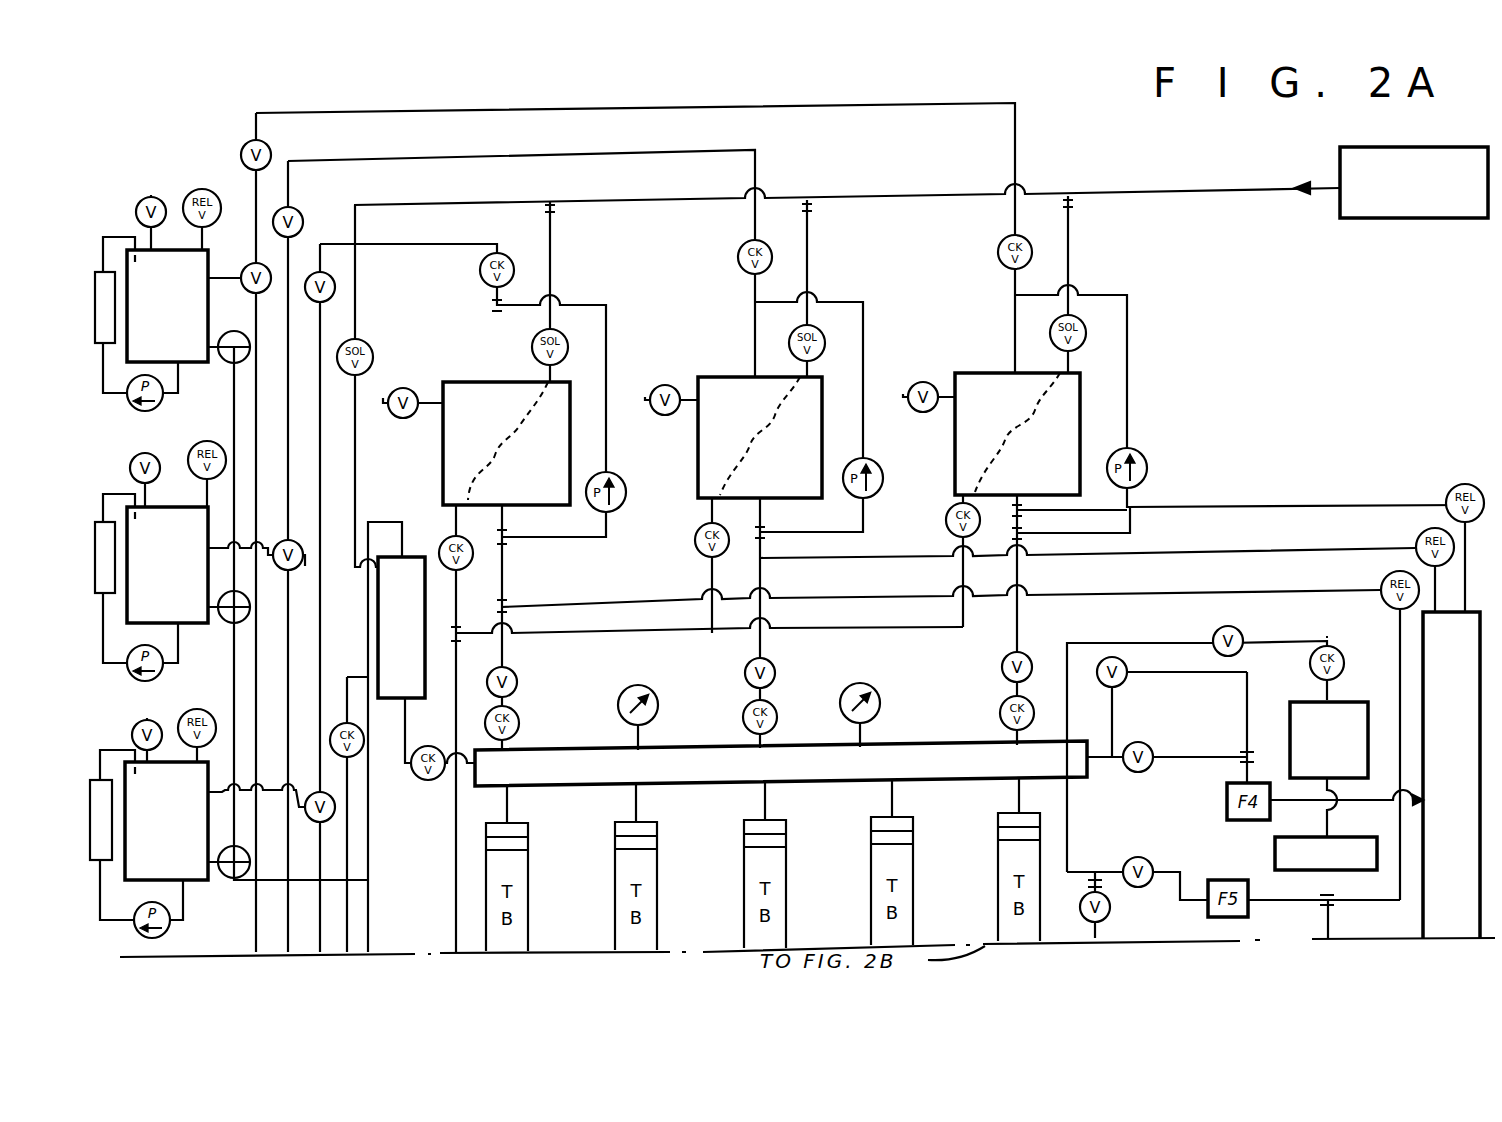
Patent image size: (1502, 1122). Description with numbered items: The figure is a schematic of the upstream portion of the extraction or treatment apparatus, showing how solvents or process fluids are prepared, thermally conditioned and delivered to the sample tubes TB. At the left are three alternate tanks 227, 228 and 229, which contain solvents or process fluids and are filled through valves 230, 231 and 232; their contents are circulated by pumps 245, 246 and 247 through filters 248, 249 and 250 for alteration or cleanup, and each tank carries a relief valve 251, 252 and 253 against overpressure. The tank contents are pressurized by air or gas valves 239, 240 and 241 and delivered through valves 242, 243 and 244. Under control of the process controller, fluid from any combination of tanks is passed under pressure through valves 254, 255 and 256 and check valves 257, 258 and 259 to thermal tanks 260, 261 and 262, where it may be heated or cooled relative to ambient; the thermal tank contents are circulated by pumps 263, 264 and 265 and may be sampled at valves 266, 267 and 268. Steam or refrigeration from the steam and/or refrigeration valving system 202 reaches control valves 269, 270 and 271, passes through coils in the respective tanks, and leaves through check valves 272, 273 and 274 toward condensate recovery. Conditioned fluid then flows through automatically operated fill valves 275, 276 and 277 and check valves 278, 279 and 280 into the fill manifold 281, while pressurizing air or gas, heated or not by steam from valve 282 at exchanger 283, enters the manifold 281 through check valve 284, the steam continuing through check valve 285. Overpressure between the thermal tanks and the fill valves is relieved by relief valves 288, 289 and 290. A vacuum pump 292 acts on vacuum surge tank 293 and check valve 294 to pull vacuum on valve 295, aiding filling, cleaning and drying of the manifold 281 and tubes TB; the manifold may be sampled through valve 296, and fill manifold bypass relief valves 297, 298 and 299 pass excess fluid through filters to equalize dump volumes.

The steam and/or refrigeration valving system 202 is at (1440, 147).
The alternate tank 227 is at (178, 918).
The alternate tank 228 is at (185, 612).
The alternate tank 229 is at (178, 372).
The valve 230 is at (148, 722).
The valve 231 is at (150, 452).
The valve 232 is at (148, 196).
The air or gas valve 239 is at (228, 880).
The air or gas valve 240 is at (226, 625).
The air or gas valve 241 is at (217, 347).
The valve 242 is at (335, 812).
The valve 243 is at (305, 566).
The valve 244 is at (247, 268).
The pump 245 is at (138, 932).
The pump 246 is at (150, 680).
The pump 247 is at (165, 400).
The filter 248 is at (112, 826).
The filter 249 is at (115, 560).
The filter 250 is at (115, 317).
The relief valve 251 is at (213, 712).
The relief valve 252 is at (214, 446).
The relief valve 253 is at (220, 180).
The valve 254 is at (335, 283).
The valve 255 is at (298, 210).
The valve 256 is at (242, 148).
The check valve 257 is at (482, 280).
The check valve 258 is at (740, 258).
The check valve 259 is at (1002, 262).
The thermal tank 260 is at (483, 380).
The thermal tank 261 is at (728, 378).
The thermal tank 262 is at (1002, 372).
The pump 263 is at (622, 478).
The pump 264 is at (880, 462).
The pump 265 is at (1146, 455).
The valve 266 is at (408, 390).
The valve 267 is at (665, 390).
The valve 268 is at (930, 385).
The control valve 269 is at (568, 340).
The control valve 270 is at (826, 337).
The control valve 271 is at (1095, 318).
The check valve 272 is at (440, 540).
The check valve 273 is at (698, 535).
The check valve 274 is at (946, 520).
The automatically operated valve 275 is at (517, 675).
The automatically operated valve 276 is at (775, 668).
The automatically operated valve 277 is at (1002, 670).
The check valve 278 is at (522, 716).
The check valve 279 is at (776, 710).
The check valve 280 is at (1000, 713).
The fill manifold 281 is at (781, 763).
The valve 282 is at (375, 335).
The exchanger 283 is at (425, 700).
The check valve 284 is at (418, 780).
The check valve 285 is at (350, 720).
The relief valve 288 is at (1388, 574).
The relief valve 289 is at (1420, 530).
The relief valve 290 is at (1472, 484).
The vacuum pump 292 is at (1273, 853).
The vacuum surge tank 293 is at (1380, 692).
The check valve 294 is at (1350, 645).
The valve 295 is at (1240, 630).
The valve 296 is at (1110, 915).
The fill manifold bypass relief valve 297 is at (1165, 850).
The fill manifold bypass relief valve 298 is at (1152, 748).
The fill manifold bypass relief valve 299 is at (1128, 668).